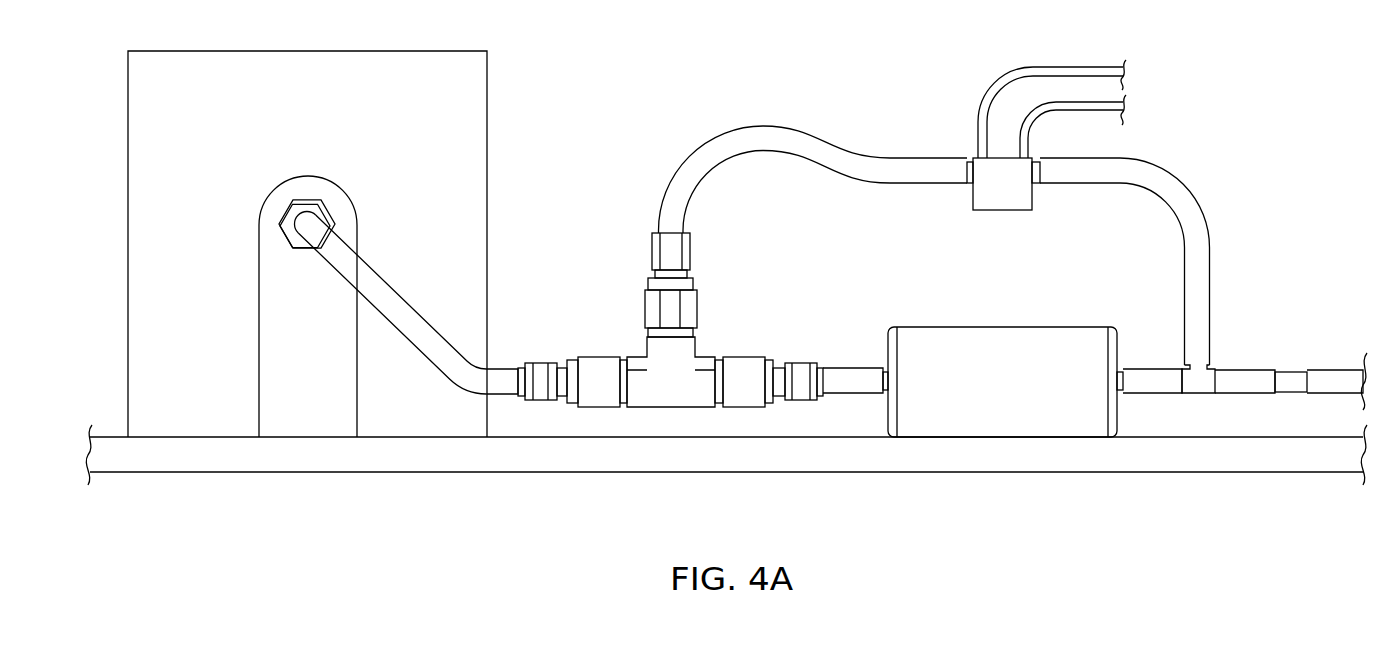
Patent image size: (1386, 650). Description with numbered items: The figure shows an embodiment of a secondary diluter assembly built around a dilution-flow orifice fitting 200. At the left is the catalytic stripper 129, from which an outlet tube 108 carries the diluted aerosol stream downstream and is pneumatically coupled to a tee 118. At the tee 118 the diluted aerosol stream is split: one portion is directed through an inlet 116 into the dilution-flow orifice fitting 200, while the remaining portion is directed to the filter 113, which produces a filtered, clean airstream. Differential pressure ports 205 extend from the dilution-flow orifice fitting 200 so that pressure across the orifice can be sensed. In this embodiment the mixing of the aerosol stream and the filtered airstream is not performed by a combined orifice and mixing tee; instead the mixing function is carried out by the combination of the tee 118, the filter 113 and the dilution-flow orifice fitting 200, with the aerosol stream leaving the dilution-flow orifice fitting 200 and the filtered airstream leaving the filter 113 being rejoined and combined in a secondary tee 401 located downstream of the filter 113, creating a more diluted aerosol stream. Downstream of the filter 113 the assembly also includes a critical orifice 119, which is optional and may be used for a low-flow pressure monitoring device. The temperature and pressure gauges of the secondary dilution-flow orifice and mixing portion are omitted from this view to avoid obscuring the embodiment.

The catalytic stripper 129 is at (127, 236).
The outlet tube 108 is at (378, 278).
The tee 118 is at (702, 355).
The inlet 116 is at (762, 126).
The dilution-flow orifice fitting 200 is at (1006, 211).
The differential pressure ports 205 is at (1020, 157).
The filter 113 is at (1000, 326).
The secondary tee 401 is at (1200, 394).
The critical orifice 119 is at (1291, 370).